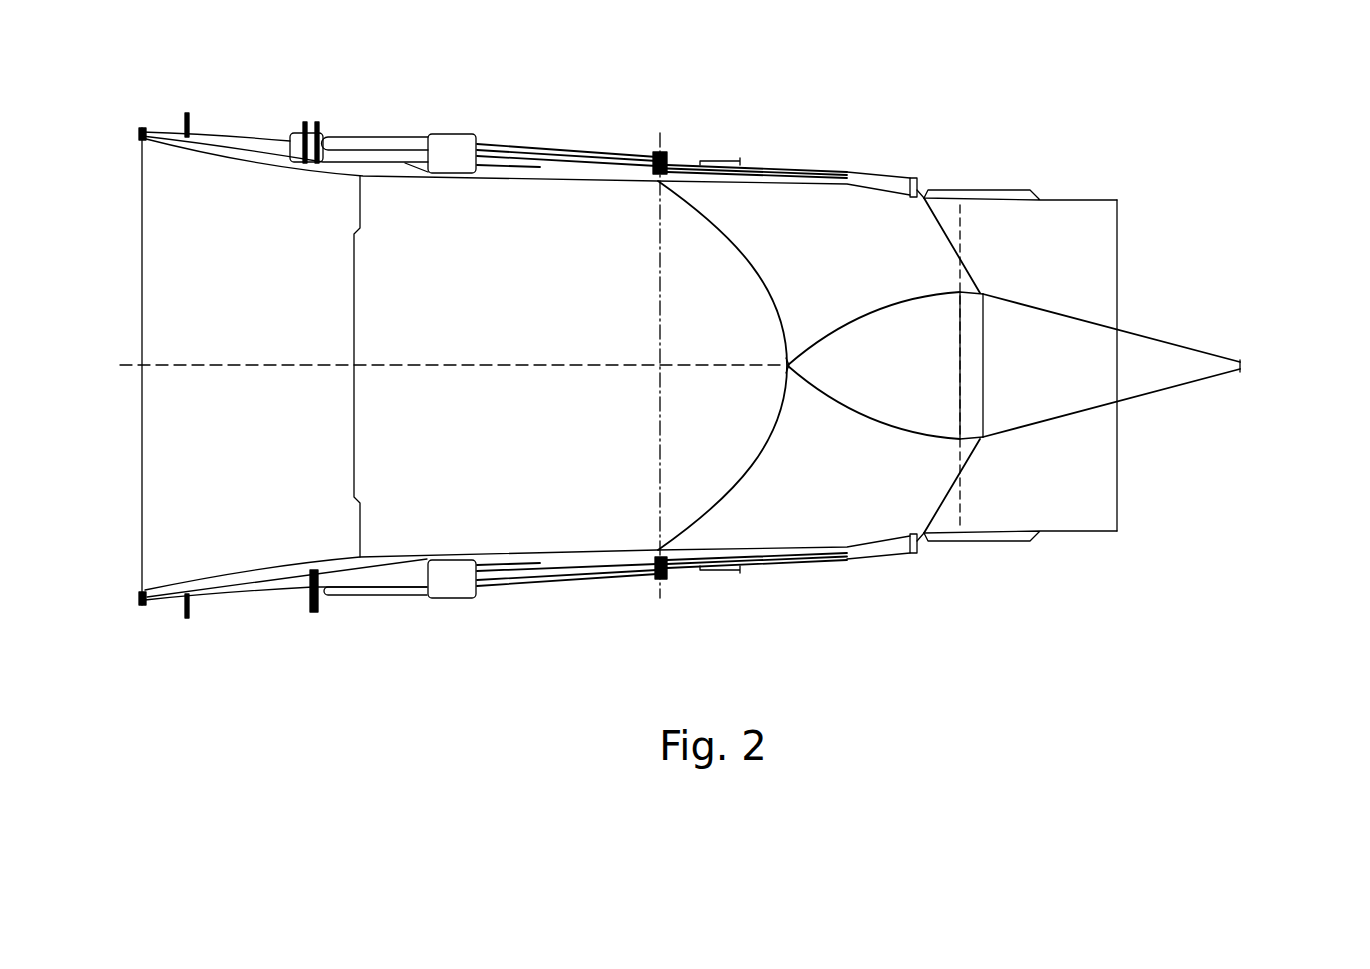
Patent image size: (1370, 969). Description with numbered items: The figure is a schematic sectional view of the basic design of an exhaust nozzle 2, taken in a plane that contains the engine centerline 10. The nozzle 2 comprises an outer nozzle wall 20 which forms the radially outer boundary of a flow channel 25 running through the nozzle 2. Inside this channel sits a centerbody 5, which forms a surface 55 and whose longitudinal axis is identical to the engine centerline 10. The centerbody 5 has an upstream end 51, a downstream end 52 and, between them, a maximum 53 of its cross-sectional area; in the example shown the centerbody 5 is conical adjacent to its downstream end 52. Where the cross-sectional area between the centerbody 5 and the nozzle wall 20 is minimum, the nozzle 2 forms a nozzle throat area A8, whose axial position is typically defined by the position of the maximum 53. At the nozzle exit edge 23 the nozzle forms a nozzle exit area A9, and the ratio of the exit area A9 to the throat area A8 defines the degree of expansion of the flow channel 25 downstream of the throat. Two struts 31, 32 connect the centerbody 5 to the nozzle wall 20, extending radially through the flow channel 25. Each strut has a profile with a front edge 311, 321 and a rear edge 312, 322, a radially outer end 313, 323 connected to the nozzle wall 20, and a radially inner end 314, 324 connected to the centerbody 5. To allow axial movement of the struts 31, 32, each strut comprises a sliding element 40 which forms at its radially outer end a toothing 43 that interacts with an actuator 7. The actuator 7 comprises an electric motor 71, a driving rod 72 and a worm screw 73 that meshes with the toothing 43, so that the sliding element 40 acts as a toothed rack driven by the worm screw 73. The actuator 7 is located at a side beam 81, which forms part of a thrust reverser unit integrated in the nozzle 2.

The nozzle 2 is at (781, 130).
The centerbody 5 is at (1010, 379).
The actuator 7 is at (407, 123).
The engine centerline 10 is at (224, 364).
The outer nozzle wall 20 is at (780, 185).
The nozzle exit edge 23 is at (1069, 326).
The flow channel 25 is at (526, 307).
The strut 31 is at (722, 273).
The strut 32 is at (722, 458).
The sliding element 40 is at (830, 582).
The toothing 43 is at (787, 567).
The upstream end 51 is at (831, 365).
The downstream end 52 is at (1242, 367).
The maximum 53 is at (959, 292).
The surface 55 is at (1050, 421).
The electric motor 71 is at (460, 134).
The driving rod 72 is at (528, 145).
The worm screw 73 is at (661, 148).
The side beam 81 is at (393, 179).
The front edge 311 is at (763, 285).
The rear edge 312 is at (944, 215).
The radially outer end 313 is at (850, 176).
The radially inner end 314 is at (851, 325).
The front edge 321 is at (733, 500).
The rear edge 322 is at (943, 514).
The radially outer end 323 is at (863, 544).
The radially inner end 324 is at (867, 412).
The nozzle throat area A8 is at (962, 226).
The nozzle exit area A9 is at (1118, 267).